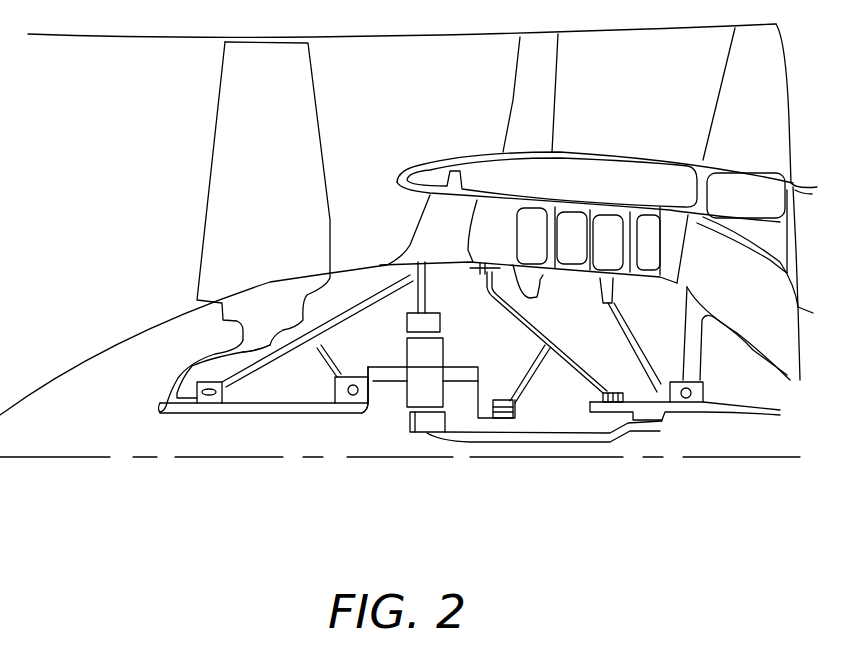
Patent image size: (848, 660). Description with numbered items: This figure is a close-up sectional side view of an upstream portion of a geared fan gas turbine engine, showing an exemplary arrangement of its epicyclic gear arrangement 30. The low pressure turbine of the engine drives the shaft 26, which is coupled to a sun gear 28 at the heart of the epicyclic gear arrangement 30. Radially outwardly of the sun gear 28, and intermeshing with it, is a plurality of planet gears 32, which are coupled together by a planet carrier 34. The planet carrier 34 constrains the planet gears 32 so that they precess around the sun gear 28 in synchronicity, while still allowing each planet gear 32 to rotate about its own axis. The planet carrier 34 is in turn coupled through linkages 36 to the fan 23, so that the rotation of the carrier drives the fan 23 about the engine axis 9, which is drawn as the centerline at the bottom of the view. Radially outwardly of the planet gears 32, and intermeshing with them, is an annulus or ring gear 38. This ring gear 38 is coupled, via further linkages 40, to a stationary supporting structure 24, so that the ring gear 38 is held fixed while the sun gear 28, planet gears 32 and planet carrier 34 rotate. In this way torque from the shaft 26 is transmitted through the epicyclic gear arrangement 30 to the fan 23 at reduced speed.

The engine axis 9 is at (97, 457).
The fan 23 is at (225, 150).
The stationary supporting structure 24 is at (427, 230).
The shaft 26 is at (553, 437).
The sun gear 28 is at (427, 427).
The epicyclic gear arrangement 30 is at (400, 402).
The planet gears 32 is at (415, 398).
The planet carrier 34 is at (478, 392).
The linkages 36 is at (380, 400).
The ring gear 38 is at (418, 298).
The linkages 40 is at (427, 322).